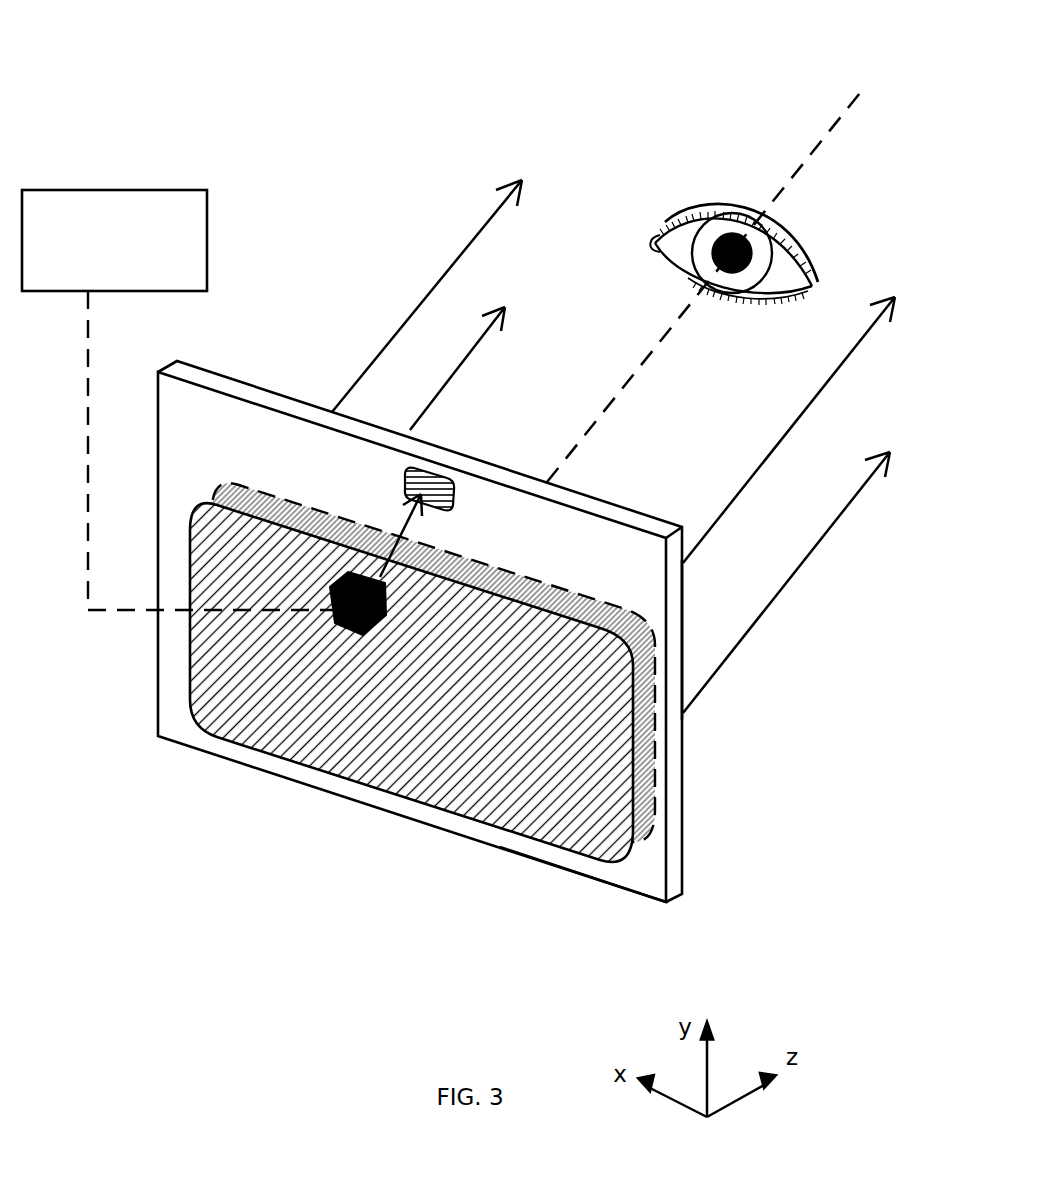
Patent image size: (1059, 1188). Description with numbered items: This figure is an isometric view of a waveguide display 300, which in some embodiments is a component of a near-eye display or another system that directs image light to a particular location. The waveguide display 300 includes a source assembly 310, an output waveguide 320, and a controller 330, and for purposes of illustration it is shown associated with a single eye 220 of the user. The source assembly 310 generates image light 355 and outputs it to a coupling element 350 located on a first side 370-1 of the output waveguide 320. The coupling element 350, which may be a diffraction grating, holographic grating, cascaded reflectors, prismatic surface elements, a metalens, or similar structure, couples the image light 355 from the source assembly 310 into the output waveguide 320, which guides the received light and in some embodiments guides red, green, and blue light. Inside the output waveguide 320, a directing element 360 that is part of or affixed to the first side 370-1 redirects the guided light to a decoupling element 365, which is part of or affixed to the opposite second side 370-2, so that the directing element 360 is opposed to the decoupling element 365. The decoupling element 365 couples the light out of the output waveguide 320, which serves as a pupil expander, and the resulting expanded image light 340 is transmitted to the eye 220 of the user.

The waveguide display 300 is at (165, 65).
The controller 330 is at (177, 400).
The expanded image light 340 is at (475, 233).
The image light 355 is at (388, 563).
The coupling element 350 is at (420, 487).
The source assembly 310 is at (332, 590).
The output waveguide 320 is at (683, 740).
The second side 370-2 is at (683, 787).
The first side 370-1 is at (650, 878).
The decoupling element 365 is at (643, 813).
The directing element 360 is at (247, 735).
The eye 220 is at (703, 287).